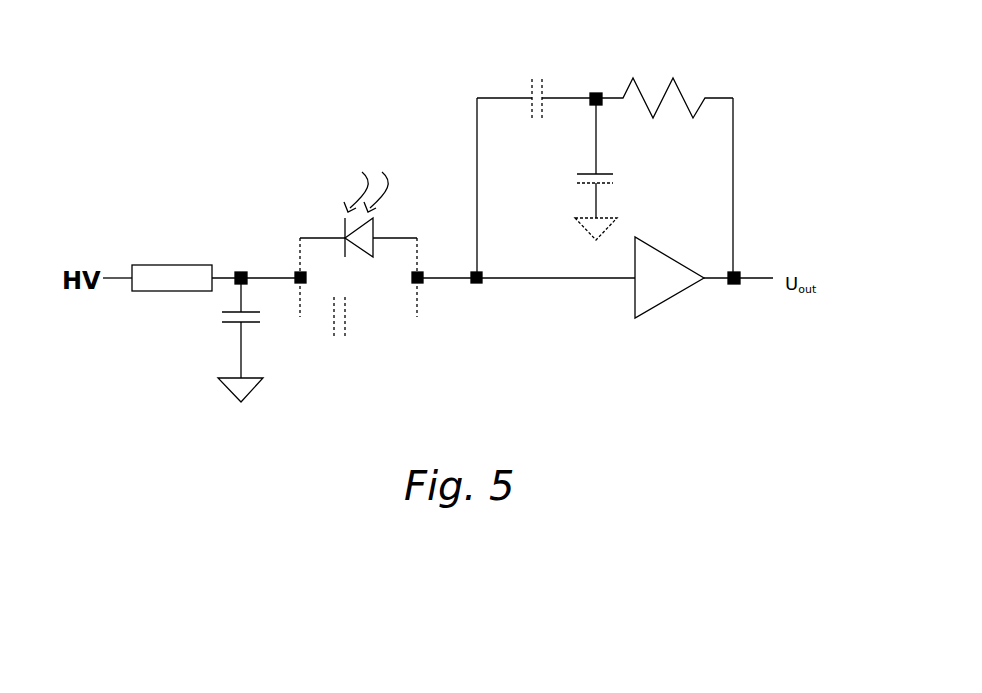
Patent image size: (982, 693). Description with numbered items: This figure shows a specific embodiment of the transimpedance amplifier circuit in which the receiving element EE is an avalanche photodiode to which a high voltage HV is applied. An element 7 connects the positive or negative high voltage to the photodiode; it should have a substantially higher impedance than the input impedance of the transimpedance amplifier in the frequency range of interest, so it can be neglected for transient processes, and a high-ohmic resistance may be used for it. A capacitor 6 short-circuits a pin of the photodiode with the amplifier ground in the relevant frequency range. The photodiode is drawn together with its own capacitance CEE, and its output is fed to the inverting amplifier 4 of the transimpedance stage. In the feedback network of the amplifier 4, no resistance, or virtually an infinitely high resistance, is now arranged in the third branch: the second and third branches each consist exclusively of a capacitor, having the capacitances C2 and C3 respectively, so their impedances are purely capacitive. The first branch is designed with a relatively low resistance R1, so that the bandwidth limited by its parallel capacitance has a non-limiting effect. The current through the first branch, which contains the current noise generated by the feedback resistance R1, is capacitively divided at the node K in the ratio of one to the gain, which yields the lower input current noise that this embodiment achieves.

The element 7 is at (181, 259).
The capacitor 6 is at (195, 343).
The receiving element EE is at (371, 244).
The detector capacitance CEE is at (381, 332).
The capacitance of the third branch capacitor C3 is at (525, 93).
The node K is at (568, 70).
The resistance of the first branch R1 is at (679, 92).
The capacitance of the second branch capacitor C2 is at (628, 172).
The inverting amplifier 4 is at (632, 293).